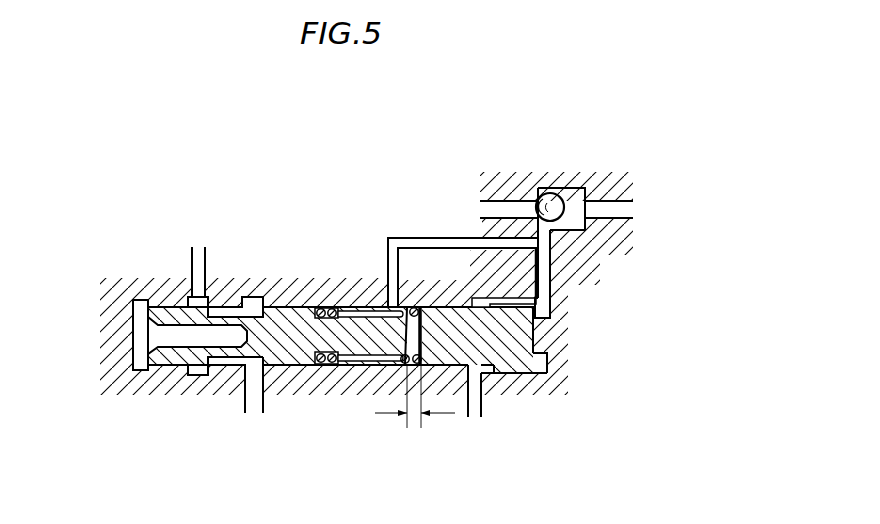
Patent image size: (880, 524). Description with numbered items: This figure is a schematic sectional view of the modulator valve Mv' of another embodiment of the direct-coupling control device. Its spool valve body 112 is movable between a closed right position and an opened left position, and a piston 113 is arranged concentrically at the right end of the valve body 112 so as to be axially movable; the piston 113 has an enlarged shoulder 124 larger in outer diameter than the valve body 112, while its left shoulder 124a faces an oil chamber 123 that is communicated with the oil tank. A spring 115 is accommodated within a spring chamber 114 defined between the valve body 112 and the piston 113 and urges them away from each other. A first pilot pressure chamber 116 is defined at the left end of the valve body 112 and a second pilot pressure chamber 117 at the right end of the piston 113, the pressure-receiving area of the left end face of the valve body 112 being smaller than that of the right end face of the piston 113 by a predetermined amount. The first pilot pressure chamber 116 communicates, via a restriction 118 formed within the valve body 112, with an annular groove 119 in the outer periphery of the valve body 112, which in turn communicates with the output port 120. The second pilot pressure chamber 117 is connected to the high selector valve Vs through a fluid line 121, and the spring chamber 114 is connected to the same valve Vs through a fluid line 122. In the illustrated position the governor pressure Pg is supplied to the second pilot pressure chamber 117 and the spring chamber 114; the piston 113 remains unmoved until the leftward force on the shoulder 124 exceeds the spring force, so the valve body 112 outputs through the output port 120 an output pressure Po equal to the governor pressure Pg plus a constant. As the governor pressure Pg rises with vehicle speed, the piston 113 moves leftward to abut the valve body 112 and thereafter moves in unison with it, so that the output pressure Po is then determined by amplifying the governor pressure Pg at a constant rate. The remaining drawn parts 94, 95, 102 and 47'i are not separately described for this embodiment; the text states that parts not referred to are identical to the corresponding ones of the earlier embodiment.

The push rod 94 is at (190, 253).
The passage 95 is at (497, 200).
The outlet port 102 is at (262, 411).
The spool valve body 112 is at (283, 316).
The piston 113 is at (542, 340).
The spring chamber 114 is at (352, 364).
The spring 115 is at (333, 307).
The first pilot pressure chamber 116 is at (137, 337).
The second pilot pressure chamber 117 is at (547, 369).
The restriction 118 is at (233, 320).
The annular groove 119 is at (222, 360).
The output port 120 is at (258, 366).
The fluid line 121 is at (546, 289).
The fluid line 122 is at (407, 246).
The oil chamber 123 is at (493, 378).
The enlarged shoulder 124 is at (527, 374).
The left shoulder 124a is at (487, 298).
The passage 47'i is at (616, 177).
The high selector valve Vs is at (549, 178).
The modulator valve Mv' is at (310, 226).
The governor pressure Pg is at (618, 220).
The output pressure Po is at (243, 412).